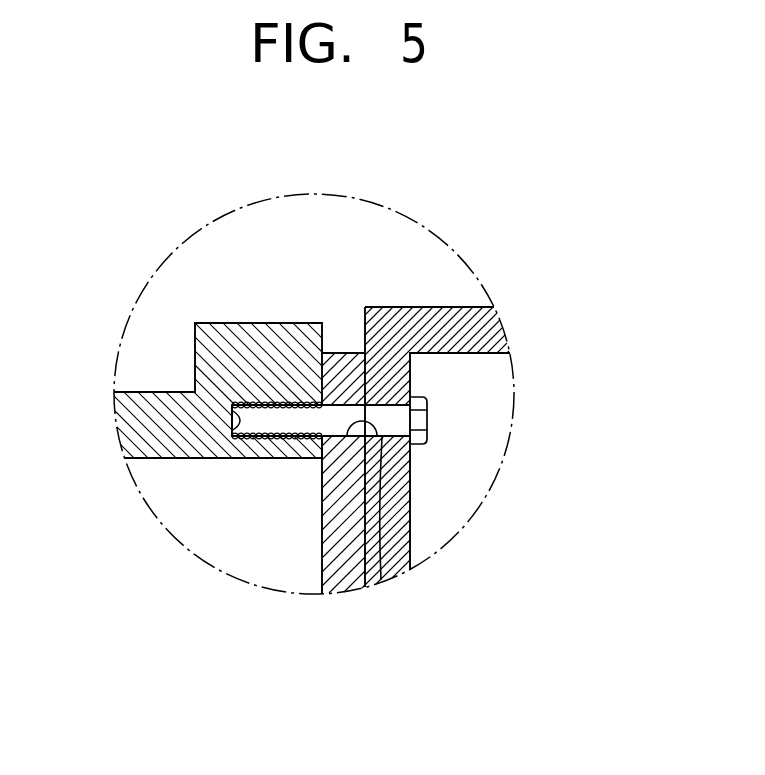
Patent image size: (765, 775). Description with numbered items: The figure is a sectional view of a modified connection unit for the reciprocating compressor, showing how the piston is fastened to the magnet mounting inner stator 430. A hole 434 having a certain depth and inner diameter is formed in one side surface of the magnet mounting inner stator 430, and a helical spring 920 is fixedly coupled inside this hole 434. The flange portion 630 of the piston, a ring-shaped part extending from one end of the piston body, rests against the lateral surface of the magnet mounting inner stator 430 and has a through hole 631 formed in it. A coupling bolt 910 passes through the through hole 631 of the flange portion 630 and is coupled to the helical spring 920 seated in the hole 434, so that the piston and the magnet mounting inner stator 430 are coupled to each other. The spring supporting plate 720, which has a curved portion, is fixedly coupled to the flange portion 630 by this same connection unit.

The magnet mounting inner stator 430 is at (168, 377).
The holes 434 is at (232, 434).
The flange portion 630 is at (345, 372).
The through holes 631 is at (381, 580).
The spring supporting plate 720 is at (448, 303).
The coupling bolts 910 is at (427, 422).
The helical spring 920 is at (272, 393).